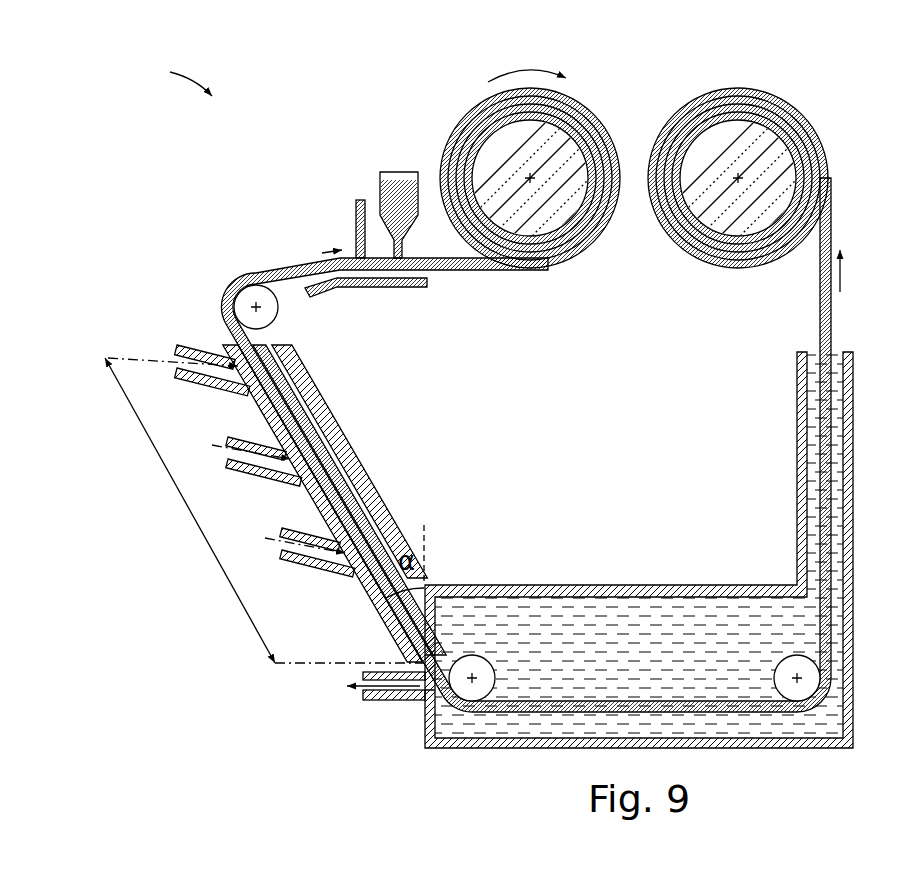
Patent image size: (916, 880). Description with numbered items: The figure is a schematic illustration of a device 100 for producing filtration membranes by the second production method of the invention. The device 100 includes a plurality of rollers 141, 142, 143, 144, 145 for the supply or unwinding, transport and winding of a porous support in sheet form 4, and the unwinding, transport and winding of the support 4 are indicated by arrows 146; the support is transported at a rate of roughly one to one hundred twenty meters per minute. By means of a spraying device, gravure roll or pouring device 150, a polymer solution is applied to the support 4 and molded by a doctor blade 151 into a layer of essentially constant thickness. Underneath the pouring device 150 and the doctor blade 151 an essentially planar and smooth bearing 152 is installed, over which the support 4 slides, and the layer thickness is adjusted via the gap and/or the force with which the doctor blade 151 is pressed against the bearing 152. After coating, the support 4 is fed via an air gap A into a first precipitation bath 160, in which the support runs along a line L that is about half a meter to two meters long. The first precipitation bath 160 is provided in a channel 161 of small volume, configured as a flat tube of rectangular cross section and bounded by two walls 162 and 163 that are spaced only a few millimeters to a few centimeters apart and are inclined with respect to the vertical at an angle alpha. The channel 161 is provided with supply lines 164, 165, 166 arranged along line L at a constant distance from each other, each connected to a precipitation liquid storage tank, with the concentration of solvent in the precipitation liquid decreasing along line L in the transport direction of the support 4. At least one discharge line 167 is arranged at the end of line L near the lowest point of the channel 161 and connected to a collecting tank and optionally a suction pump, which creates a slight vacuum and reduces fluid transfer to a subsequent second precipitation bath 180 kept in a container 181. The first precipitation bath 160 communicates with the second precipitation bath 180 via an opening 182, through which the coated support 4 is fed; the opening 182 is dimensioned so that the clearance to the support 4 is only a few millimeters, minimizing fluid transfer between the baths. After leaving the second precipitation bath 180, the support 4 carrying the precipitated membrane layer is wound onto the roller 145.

The device 100 is at (166, 77).
The porous support in sheet form 4 is at (481, 273).
The roller 141 is at (550, 178).
The roller 145 is at (758, 178).
The arrows 146 is at (858, 270).
The pouring device 150 is at (393, 171).
The doctor blade 151 is at (355, 220).
The bearing 152 is at (398, 288).
The roller 142 is at (278, 322).
The roller 143 is at (481, 658).
The roller 144 is at (788, 657).
The first precipitation bath 160 is at (300, 411).
The channel 161 is at (334, 503).
The wall 162 is at (378, 506).
The wall 163 is at (398, 629).
The supply line 164 is at (203, 380).
The supply line 165 is at (253, 476).
The supply line 166 is at (300, 569).
The discharge line 167 is at (393, 702).
The second precipitation bath 180 is at (612, 640).
The container 181 is at (537, 491).
The opening 182 is at (437, 662).
The air gap A is at (250, 264).
The line L is at (190, 508).